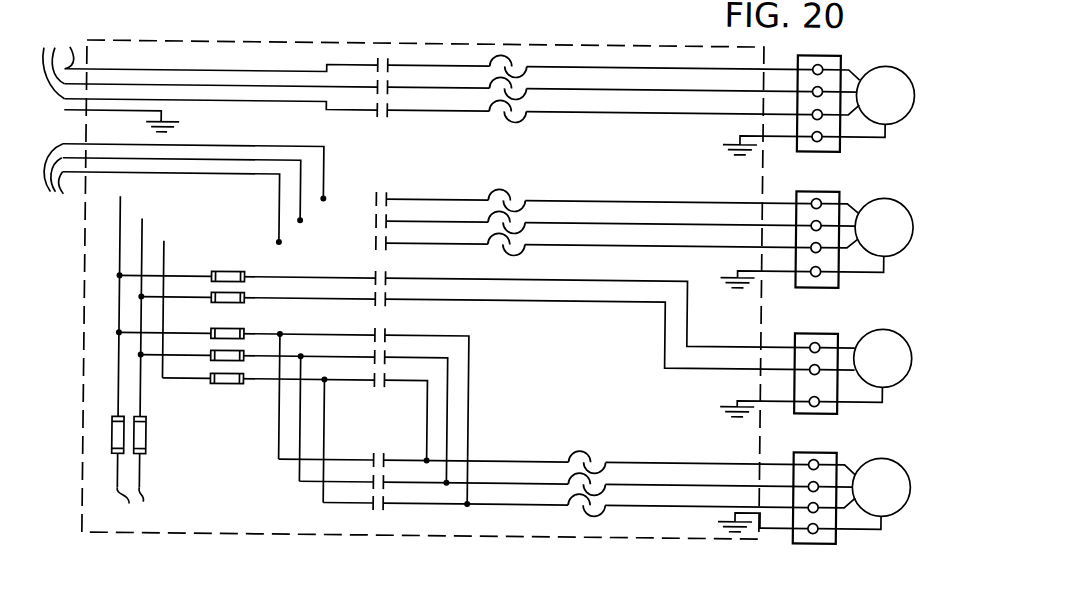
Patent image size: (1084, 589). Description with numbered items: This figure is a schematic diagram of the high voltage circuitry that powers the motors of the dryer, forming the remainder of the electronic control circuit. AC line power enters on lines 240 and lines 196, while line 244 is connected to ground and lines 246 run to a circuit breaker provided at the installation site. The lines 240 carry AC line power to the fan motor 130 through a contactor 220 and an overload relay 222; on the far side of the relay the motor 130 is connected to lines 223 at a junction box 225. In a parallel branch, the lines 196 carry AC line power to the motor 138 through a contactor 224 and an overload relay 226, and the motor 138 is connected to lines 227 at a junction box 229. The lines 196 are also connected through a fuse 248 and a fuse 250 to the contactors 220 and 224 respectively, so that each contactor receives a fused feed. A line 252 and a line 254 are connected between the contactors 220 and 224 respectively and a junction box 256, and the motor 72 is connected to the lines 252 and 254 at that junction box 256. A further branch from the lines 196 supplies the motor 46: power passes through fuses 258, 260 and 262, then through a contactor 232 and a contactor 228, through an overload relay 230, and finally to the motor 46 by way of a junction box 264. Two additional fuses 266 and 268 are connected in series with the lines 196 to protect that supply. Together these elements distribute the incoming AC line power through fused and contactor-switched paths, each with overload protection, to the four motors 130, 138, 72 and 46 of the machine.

The lines 240 is at (208, 62).
The line 244 is at (93, 114).
The lines 246 is at (179, 192).
The contactor 220 is at (380, 119).
The overload relay 222 is at (503, 123).
The lines 223 is at (625, 65).
The contactor 224 is at (374, 245).
The junction box 225 is at (808, 144).
The fan motor 130 is at (893, 70).
The overload relay 226 is at (491, 251).
The lines 227 is at (606, 197).
The junction box 229 is at (827, 280).
The motor 138 is at (905, 181).
The fuse 248 is at (230, 270).
The fuse 250 is at (228, 301).
The line 252 is at (636, 282).
The line 254 is at (598, 300).
The junction box 256 is at (826, 334).
The motor 72 is at (893, 370).
The fuse 258 is at (225, 331).
The fuse 260 is at (213, 355).
The fuse 262 is at (222, 385).
The contactor 232 is at (373, 324).
The fuse 266 is at (117, 435).
The fuse 268 is at (142, 439).
The lines 196 is at (150, 486).
The contactor 228 is at (358, 507).
The overload relay 230 is at (605, 448).
The junction box 264 is at (823, 452).
The motor 46 is at (893, 470).